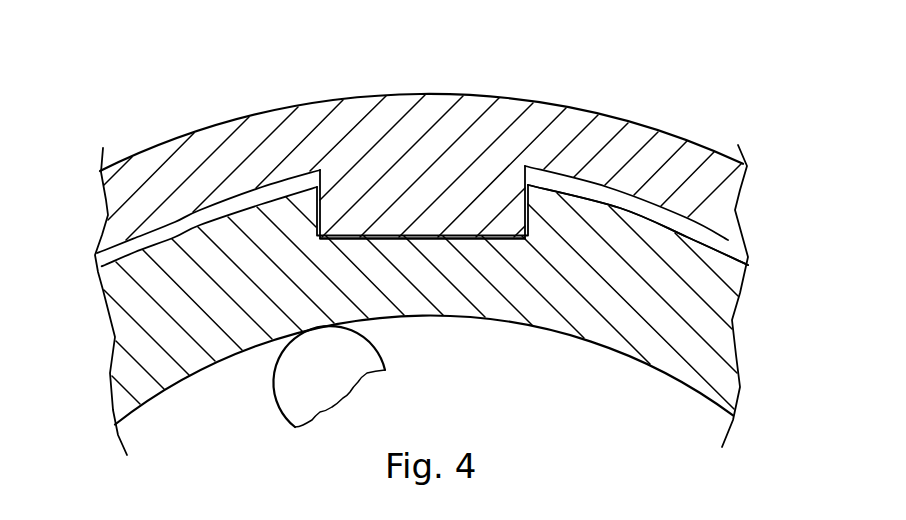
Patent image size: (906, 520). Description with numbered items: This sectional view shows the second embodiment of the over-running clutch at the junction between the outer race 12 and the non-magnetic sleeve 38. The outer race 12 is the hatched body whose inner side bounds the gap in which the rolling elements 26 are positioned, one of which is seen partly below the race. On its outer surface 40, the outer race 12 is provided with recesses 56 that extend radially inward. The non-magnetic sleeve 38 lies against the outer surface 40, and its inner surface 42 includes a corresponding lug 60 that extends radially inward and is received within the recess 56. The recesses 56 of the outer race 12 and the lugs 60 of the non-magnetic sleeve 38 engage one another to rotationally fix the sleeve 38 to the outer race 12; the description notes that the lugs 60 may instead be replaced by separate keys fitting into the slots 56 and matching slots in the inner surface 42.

The outer race 12 is at (587, 315).
The rolling elements 26 is at (295, 385).
The non-magnetic sleeve 38 is at (620, 152).
The outer surface of the outer race 40 is at (100, 262).
The inner surface of the non-magnetic sleeve 42 is at (748, 261).
The recesses 56 is at (462, 237).
The lugs 60 is at (392, 217).